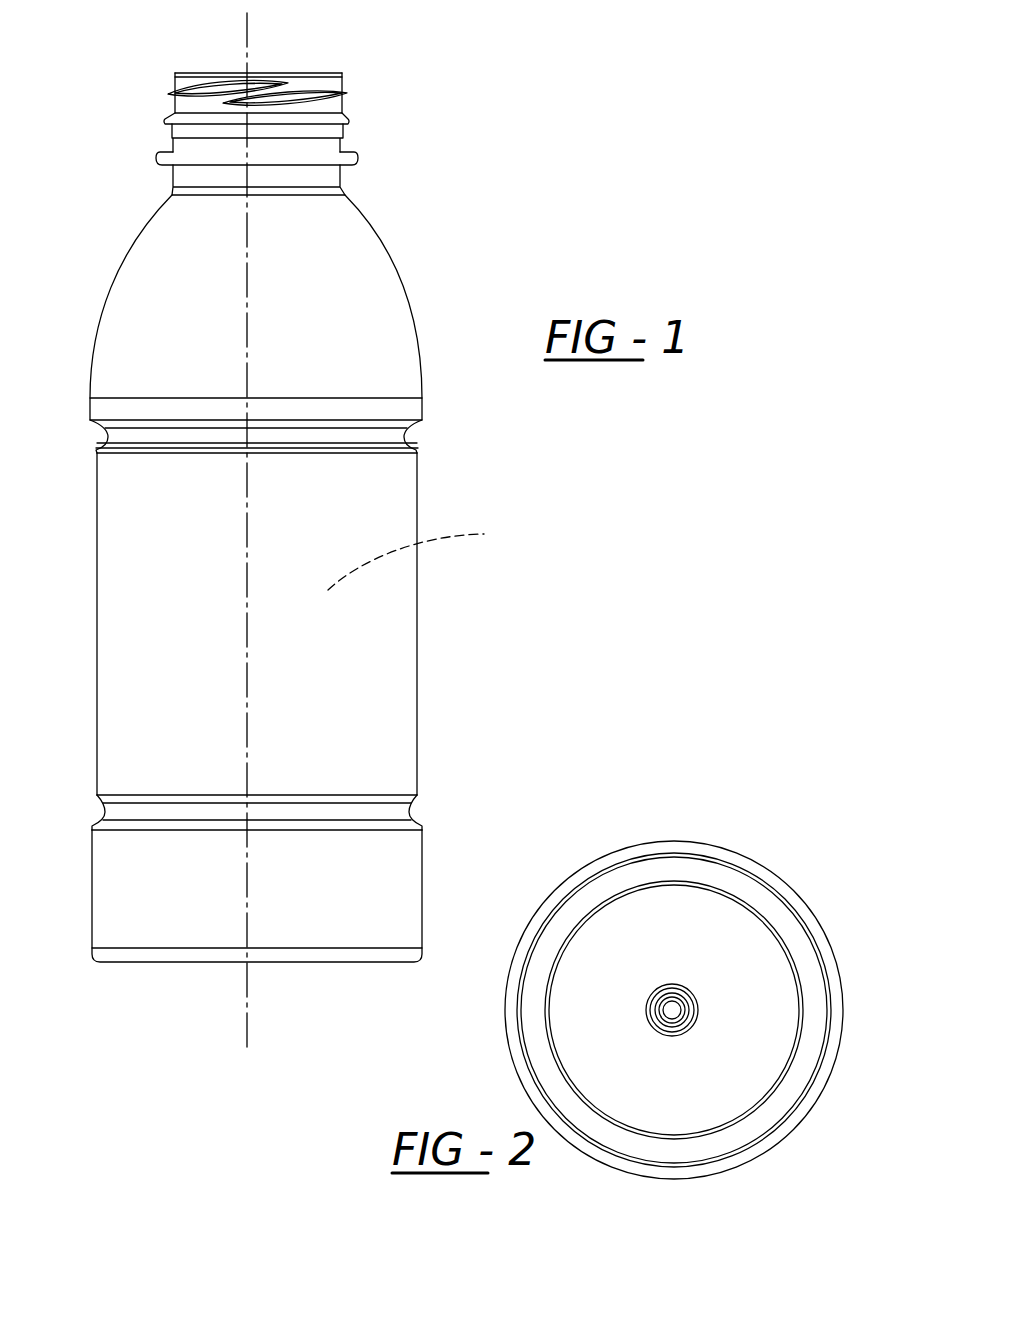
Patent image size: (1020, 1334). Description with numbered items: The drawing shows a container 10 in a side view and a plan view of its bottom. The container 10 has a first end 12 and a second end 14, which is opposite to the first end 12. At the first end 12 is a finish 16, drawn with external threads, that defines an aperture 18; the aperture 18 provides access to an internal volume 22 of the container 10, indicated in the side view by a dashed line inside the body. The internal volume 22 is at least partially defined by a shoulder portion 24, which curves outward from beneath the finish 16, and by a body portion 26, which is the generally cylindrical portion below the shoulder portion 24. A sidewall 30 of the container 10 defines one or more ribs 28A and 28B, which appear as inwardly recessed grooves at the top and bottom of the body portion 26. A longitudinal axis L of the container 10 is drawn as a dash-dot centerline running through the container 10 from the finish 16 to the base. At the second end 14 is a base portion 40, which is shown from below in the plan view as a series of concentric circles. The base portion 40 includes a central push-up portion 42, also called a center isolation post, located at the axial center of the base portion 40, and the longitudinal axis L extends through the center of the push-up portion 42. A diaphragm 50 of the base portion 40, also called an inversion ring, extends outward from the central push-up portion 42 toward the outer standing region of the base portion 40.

In FIG. 1, the container 10 is at (474, 148).
In FIG. 1, the first end 12 is at (312, 73).
In FIG. 1, the second end 14 is at (302, 962).
In FIG. 1, the finish 16 is at (342, 78).
In FIG. 1, the aperture 18 is at (190, 73).
In FIG. 1, the internal volume 22 is at (425, 555).
In FIG. 1, the shoulder portion 24 is at (388, 255).
In FIG. 1, the body portion 26 is at (417, 653).
In FIG. 1, the rib 28A is at (403, 437).
In FIG. 1, the rib 28B is at (410, 815).
In FIG. 1, the sidewall 30 is at (97, 648).
In FIG. 2, the sidewall 30 is at (505, 1017).
In FIG. 1, the base portion 40 is at (187, 962).
In FIG. 2, the base portion 40 is at (629, 880).
In FIG. 2, the central push-up portion 42 is at (675, 1011).
In FIG. 2, the diaphragm 50 is at (755, 1005).
In FIG. 1, the longitudinal axis L is at (217, 20).